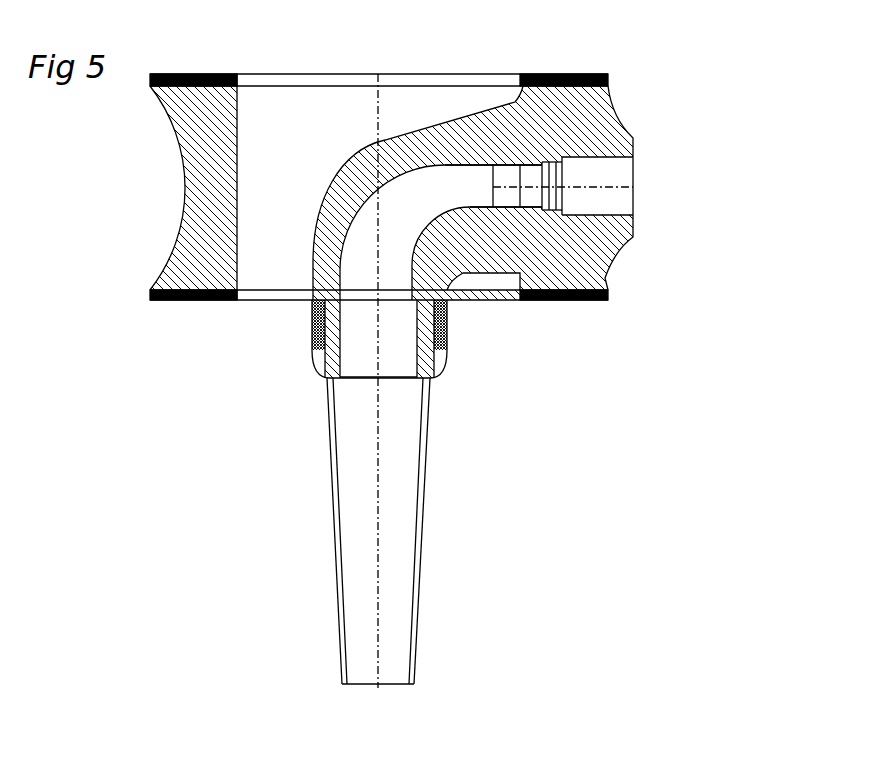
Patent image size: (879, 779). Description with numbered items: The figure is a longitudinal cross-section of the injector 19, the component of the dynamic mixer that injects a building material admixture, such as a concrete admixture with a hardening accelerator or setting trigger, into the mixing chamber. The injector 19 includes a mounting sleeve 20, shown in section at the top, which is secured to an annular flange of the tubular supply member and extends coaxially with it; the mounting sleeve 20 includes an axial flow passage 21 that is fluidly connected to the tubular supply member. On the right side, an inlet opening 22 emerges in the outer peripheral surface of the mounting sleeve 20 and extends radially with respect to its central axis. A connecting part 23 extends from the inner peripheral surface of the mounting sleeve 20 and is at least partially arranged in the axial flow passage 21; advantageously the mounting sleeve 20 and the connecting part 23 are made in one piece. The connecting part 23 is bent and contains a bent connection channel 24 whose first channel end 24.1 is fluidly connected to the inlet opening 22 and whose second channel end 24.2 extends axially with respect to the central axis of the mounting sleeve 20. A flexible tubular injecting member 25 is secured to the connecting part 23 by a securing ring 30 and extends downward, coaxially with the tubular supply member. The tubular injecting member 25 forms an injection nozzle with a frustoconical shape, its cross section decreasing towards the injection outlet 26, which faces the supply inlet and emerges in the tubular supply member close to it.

The injector 19 is at (641, 274).
The mounting sleeve 20 is at (173, 223).
The axial flow passage 21 is at (284, 150).
The inlet opening 22 is at (617, 173).
The connecting part 23 is at (418, 142).
The connection channel 24 is at (408, 200).
The first channel end 24.1 is at (527, 175).
The second channel end 24.2 is at (437, 307).
The tubular injecting member 25 is at (338, 543).
The injection outlet 26 is at (402, 683).
The securing ring 30 is at (312, 332).